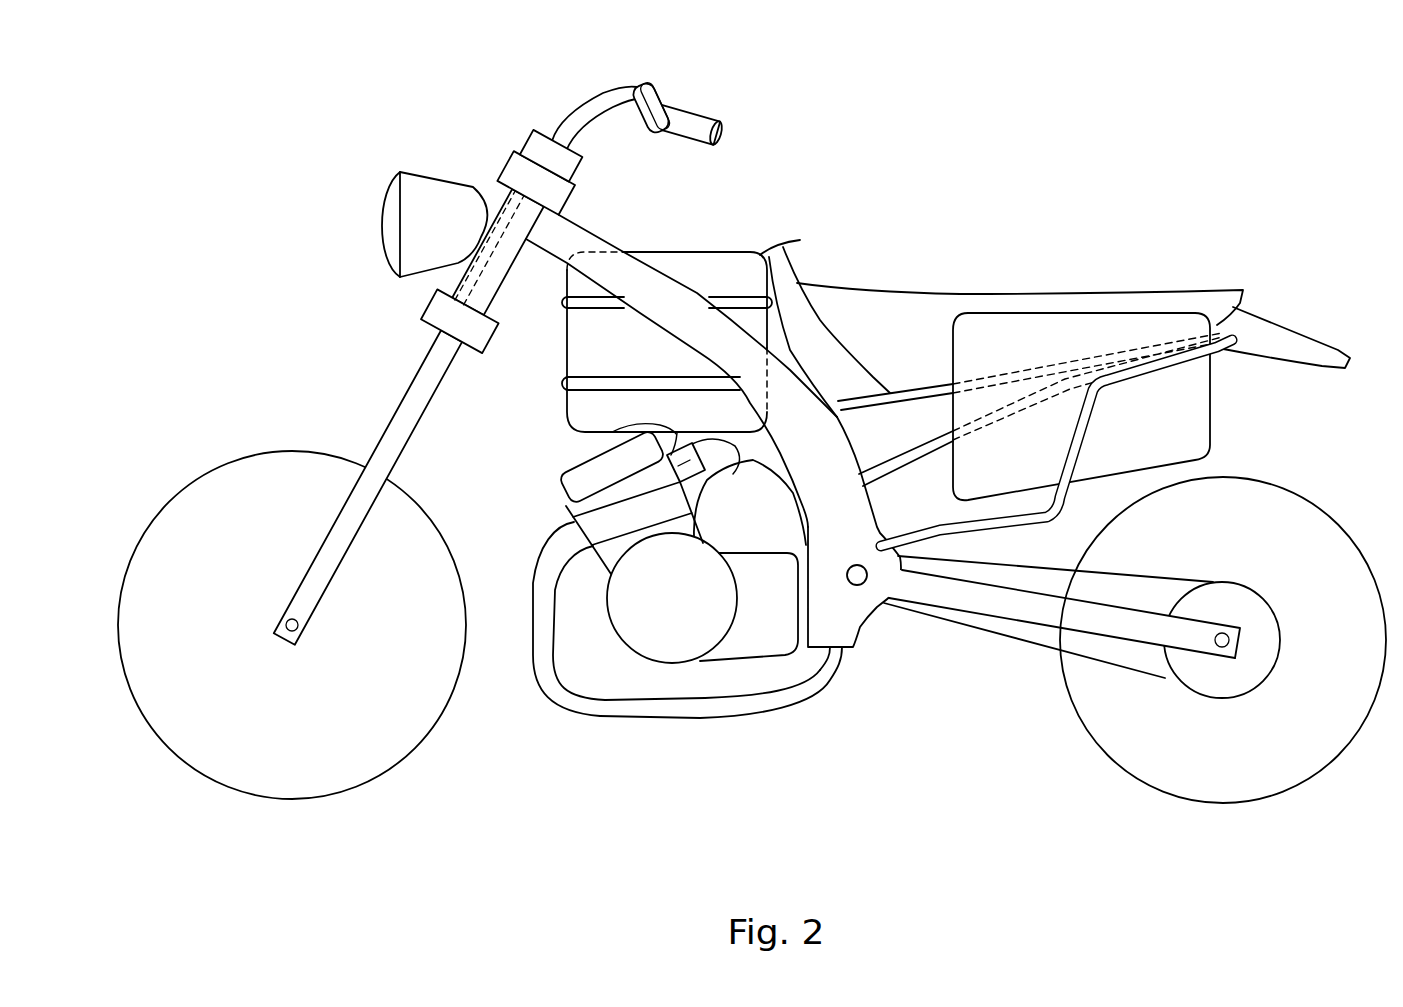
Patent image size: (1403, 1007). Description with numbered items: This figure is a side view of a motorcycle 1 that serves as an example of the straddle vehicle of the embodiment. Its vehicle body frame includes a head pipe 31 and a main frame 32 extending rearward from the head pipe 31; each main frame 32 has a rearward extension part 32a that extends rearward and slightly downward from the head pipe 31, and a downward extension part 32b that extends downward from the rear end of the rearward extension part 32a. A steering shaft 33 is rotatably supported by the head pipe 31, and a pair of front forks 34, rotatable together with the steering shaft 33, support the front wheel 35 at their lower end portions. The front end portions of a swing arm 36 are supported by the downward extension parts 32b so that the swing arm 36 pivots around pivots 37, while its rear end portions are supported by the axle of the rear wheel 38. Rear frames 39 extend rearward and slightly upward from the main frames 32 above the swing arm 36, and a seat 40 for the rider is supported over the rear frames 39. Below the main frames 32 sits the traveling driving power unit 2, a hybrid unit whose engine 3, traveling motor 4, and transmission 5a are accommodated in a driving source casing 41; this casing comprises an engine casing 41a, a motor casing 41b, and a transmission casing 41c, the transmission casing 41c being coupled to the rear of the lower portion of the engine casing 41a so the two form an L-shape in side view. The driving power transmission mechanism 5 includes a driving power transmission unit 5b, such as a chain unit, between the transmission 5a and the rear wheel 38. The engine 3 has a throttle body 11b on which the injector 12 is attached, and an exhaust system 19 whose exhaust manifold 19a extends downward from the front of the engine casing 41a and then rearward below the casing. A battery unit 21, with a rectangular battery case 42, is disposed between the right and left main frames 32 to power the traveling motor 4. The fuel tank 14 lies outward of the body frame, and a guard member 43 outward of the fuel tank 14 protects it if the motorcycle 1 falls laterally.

The straddle vehicle 1 is at (1215, 143).
The traveling driving power unit 2 is at (583, 583).
The engine 3 is at (658, 660).
The traveling motor 4 is at (782, 545).
The driving power transmission mechanism 5 is at (983, 672).
The transmission 5a is at (763, 537).
The driving power transmission unit 5b is at (973, 613).
The throttle body 11b is at (557, 497).
The injector 12 is at (662, 440).
The fuel tank 14 is at (1007, 330).
The exhaust system 19 is at (522, 770).
The exhaust manifold 19a is at (573, 712).
The battery unit 21 is at (568, 406).
The head pipe 31 is at (503, 220).
The main frame 32 is at (568, 235).
The rearward extension part 32a is at (623, 273).
The downward extension part 32b is at (840, 627).
The steering shaft 33 is at (460, 300).
The front fork 34 is at (413, 392).
The front wheel 35 is at (277, 800).
The swing arm 36 is at (1037, 610).
The pivot 37 is at (858, 578).
The rear wheel 38 is at (1220, 804).
The rear frame 39 is at (917, 393).
The seat 40 is at (868, 307).
The driving source casing 41 is at (705, 652).
The engine casing 41a is at (622, 645).
The motor casing 41b is at (823, 648).
The transmission casing 41c is at (742, 640).
The battery case 42 is at (578, 351).
The guard member 43 is at (1087, 417).